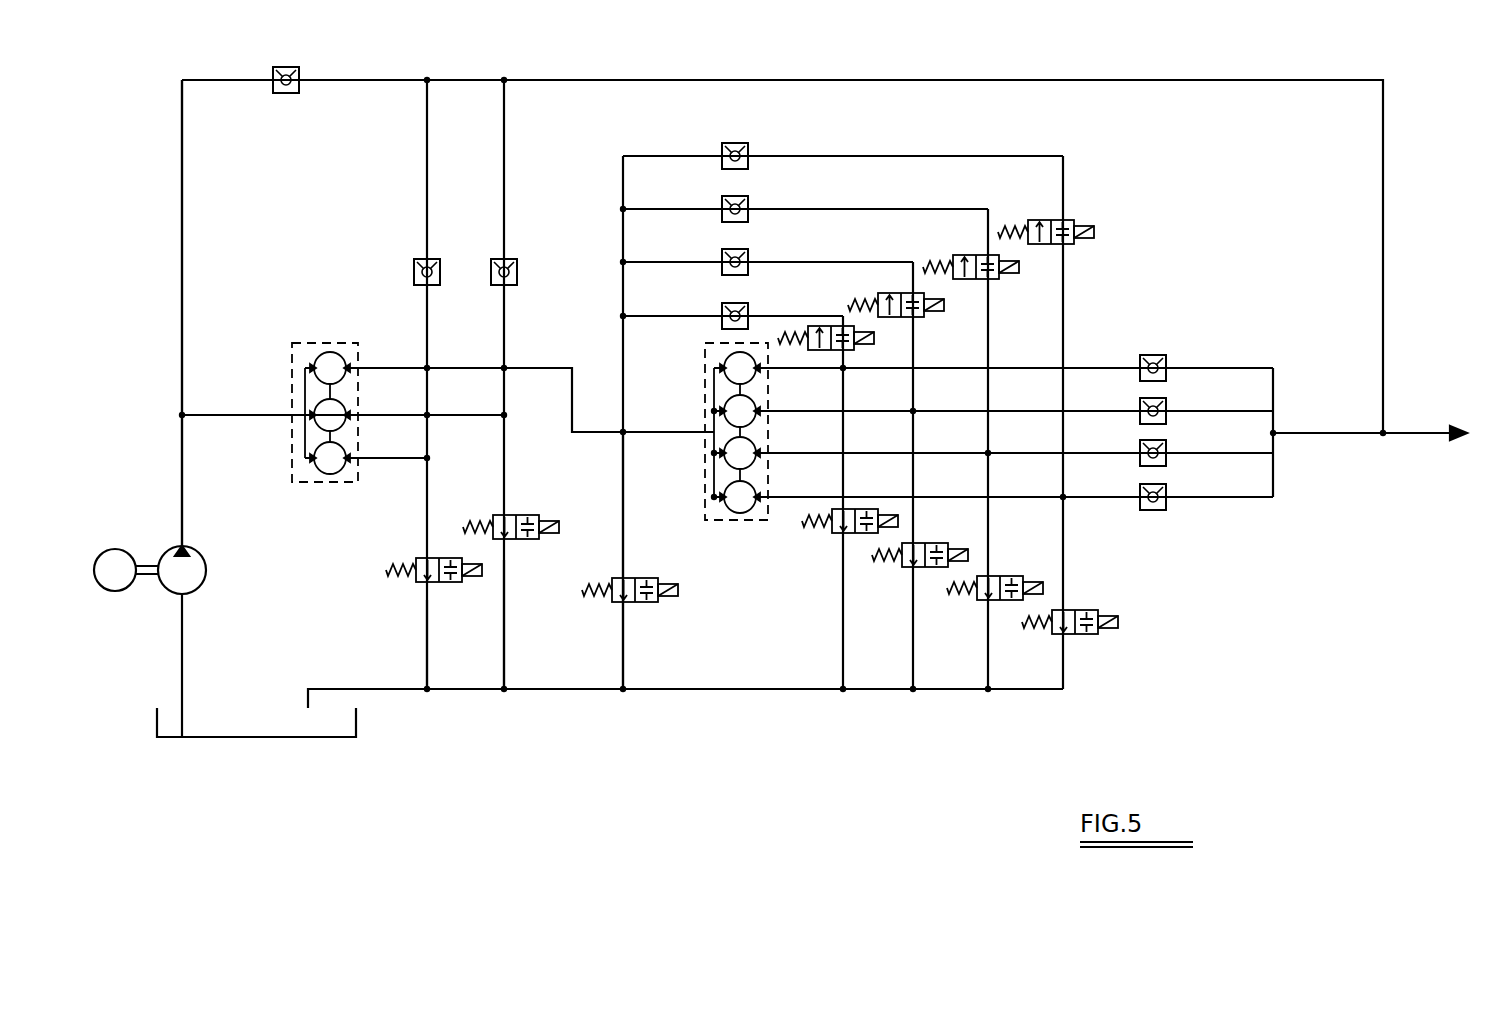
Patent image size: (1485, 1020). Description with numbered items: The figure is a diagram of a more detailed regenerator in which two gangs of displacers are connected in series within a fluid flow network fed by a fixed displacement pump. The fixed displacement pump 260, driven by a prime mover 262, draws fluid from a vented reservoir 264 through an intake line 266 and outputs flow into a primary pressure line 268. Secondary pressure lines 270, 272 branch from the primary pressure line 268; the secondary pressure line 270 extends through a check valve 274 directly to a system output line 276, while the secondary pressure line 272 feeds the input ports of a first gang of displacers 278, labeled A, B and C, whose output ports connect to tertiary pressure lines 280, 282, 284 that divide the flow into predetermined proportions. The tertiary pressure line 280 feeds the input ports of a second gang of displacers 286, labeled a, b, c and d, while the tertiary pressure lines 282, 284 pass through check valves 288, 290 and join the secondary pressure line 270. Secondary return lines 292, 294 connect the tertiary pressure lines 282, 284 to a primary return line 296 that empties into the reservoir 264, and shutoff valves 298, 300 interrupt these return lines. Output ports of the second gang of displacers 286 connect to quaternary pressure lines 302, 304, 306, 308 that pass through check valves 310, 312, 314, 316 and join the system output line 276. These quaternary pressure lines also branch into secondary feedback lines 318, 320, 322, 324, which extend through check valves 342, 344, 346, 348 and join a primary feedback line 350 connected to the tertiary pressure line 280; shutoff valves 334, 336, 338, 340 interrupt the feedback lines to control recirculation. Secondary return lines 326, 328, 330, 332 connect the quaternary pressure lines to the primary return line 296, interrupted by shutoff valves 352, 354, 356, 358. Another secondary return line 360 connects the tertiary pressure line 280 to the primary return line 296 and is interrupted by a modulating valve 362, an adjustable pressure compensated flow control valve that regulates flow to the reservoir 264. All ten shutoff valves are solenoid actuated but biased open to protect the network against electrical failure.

The fixed displacement pump 260 is at (206, 556).
The prime mover 262 is at (104, 592).
The vented reservoir 264 is at (262, 745).
The intake line 266 is at (186, 690).
The primary pressure line 268 is at (180, 321).
The secondary pressure line 270 is at (200, 84).
The secondary pressure line 272 is at (212, 418).
The check valve 274 is at (292, 70).
The system output line 276 is at (1318, 436).
The first gang of displacers 278 is at (292, 346).
The tertiary pressure line 280 is at (568, 372).
The tertiary pressure line 282 is at (506, 127).
The tertiary pressure line 284 is at (428, 205).
The second gang of displacers 286 is at (706, 392).
The check valve 288 is at (512, 284).
The check valve 290 is at (434, 284).
The secondary return line 292 is at (508, 674).
The secondary return line 294 is at (430, 672).
The primary return line 296 is at (410, 686).
The shutoff valve 298 is at (526, 514).
The shutoff valve 300 is at (426, 558).
The quaternary pressure line 302 is at (1250, 366).
The quaternary pressure line 304 is at (1250, 409).
The quaternary pressure line 306 is at (1250, 451).
The quaternary pressure line 308 is at (1250, 495).
The check valve 310 is at (1142, 356).
The check valve 312 is at (1142, 400).
The check valve 314 is at (1142, 442).
The check valve 316 is at (1142, 486).
The secondary feedback line 318 is at (702, 314).
The secondary feedback line 320 is at (700, 261).
The secondary feedback line 322 is at (700, 208).
The secondary feedback line 324 is at (700, 150).
The secondary return line 326 is at (840, 686).
The secondary return line 328 is at (910, 686).
The secondary return line 330 is at (984, 686).
The secondary return line 332 is at (1060, 686).
The shutoff valve 334 is at (846, 352).
The shutoff valve 336 is at (916, 318).
The shutoff valve 338 is at (990, 282).
The shutoff valve 340 is at (1068, 218).
The check valve 342 is at (746, 312).
The check valve 344 is at (746, 258).
The check valve 346 is at (746, 204).
The check valve 348 is at (746, 146).
The primary feedback line 350 is at (622, 366).
The shutoff valve 352 is at (842, 534).
The shutoff valve 354 is at (920, 540).
The shutoff valve 356 is at (996, 574).
The shutoff valve 358 is at (1076, 608).
The secondary return line 360 is at (624, 516).
The modulating valve 362 is at (656, 604).